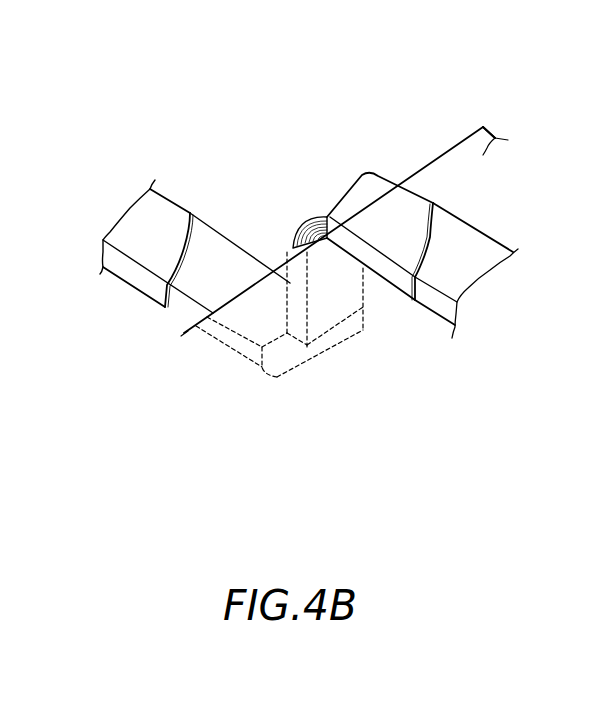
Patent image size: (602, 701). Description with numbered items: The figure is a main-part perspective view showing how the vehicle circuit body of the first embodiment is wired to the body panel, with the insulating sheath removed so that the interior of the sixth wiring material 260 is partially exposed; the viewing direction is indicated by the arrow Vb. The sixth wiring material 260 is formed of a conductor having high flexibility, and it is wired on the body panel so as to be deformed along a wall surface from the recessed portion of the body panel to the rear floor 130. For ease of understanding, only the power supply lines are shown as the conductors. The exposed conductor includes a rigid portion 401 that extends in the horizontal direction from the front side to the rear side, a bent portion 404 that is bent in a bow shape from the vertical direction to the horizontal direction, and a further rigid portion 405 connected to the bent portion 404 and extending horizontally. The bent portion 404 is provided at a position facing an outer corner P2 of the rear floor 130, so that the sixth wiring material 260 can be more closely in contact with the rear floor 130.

The rear floor 130 is at (497, 139).
The outer corner P2 is at (456, 143).
The sixth wiring material 260 is at (347, 168).
The rigid portion 401 is at (208, 261).
The bent portion 404 is at (288, 246).
The rigid portion 405 is at (407, 257).
The view direction Vb is at (224, 407).